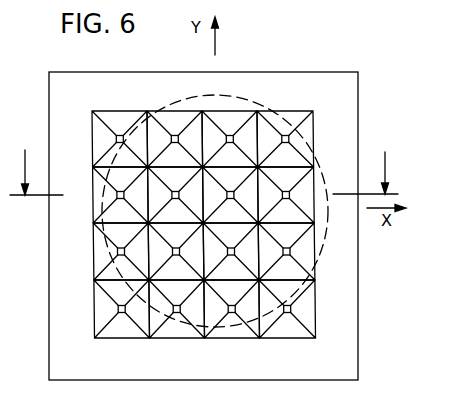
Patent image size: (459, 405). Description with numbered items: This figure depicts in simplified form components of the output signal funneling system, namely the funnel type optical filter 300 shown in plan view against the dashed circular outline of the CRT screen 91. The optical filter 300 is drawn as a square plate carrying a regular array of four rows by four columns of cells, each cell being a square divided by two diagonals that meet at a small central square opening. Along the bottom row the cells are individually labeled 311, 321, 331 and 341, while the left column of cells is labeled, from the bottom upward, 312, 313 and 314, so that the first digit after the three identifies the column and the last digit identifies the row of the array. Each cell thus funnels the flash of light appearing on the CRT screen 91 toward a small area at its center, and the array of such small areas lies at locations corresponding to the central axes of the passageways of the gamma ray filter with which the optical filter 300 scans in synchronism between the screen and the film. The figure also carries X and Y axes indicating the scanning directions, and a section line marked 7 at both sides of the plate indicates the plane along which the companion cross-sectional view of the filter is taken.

The section line 7- 7 is at (204, 159).
The CRT screen 91 is at (325, 233).
The funnel type optical filter 300 is at (332, 325).
The pyramidal element 311 is at (120, 330).
The pyramidal element 321 is at (175, 333).
The pyramidal element 331 is at (238, 330).
The pyramidal element 341 is at (283, 330).
The pyramidal element 312 is at (105, 259).
The pyramidal element 313 is at (101, 195).
The pyramidal element 314 is at (101, 138).